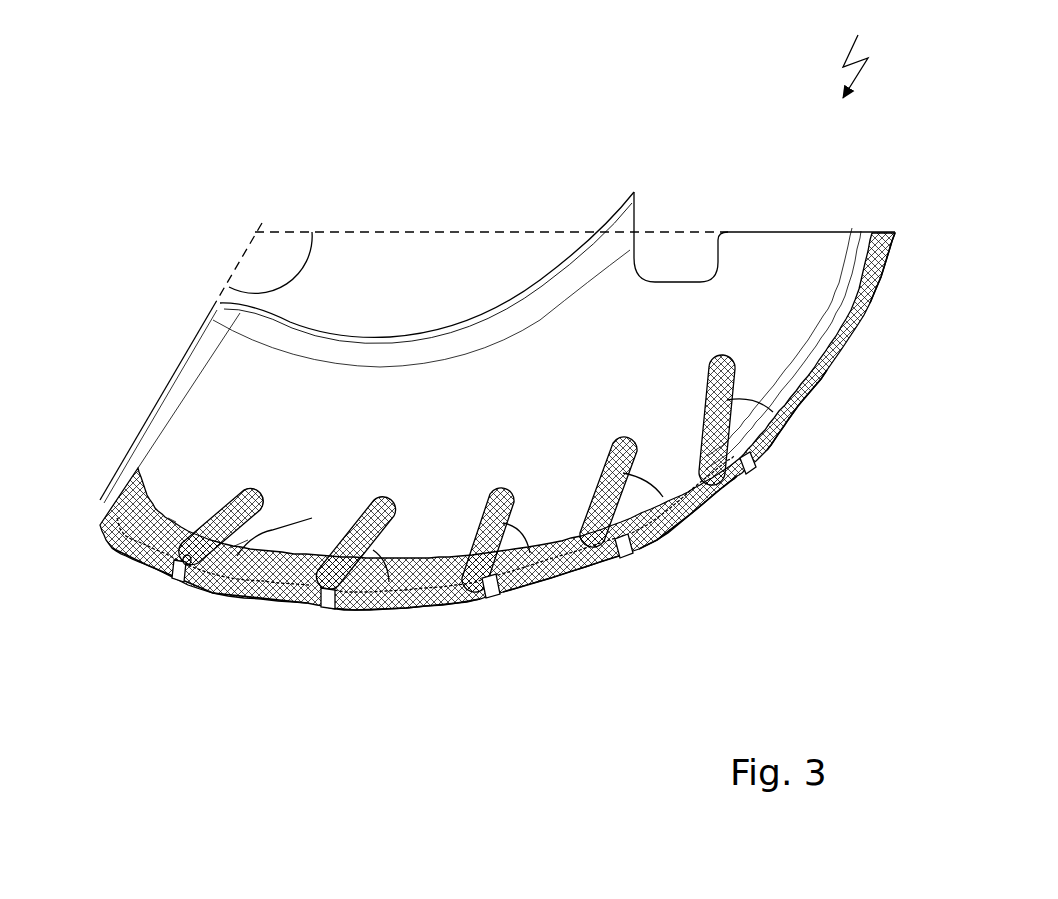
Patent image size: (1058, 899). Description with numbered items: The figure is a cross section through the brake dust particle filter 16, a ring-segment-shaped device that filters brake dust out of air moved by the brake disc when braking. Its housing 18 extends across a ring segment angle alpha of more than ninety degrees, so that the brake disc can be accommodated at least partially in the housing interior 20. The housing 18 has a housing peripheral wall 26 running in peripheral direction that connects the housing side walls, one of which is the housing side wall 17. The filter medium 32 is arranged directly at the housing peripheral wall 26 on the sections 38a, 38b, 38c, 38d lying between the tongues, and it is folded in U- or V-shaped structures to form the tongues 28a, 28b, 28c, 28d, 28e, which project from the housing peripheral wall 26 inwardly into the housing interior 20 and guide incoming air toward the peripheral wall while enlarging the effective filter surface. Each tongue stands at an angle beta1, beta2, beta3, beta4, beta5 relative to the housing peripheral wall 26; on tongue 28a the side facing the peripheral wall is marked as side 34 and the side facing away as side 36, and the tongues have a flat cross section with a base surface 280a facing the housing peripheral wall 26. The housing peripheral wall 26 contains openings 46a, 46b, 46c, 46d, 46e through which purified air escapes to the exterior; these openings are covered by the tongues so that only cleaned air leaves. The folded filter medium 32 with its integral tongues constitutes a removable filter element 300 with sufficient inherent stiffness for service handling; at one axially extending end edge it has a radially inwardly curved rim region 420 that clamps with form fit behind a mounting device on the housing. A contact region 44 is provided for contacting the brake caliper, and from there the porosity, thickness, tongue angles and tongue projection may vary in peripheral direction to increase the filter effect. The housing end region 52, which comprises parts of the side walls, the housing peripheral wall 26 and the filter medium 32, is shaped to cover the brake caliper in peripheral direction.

The brake dust particle filter 16 is at (861, 49).
The housing side wall 17 is at (826, 247).
The housing 18 is at (418, 328).
The housing interior 20 is at (644, 324).
The housing peripheral wall 26 is at (843, 363).
The filter medium 32 is at (857, 310).
The housing end region 52 is at (810, 413).
The tongue 28a is at (253, 490).
The tongue 28b is at (380, 507).
The tongue 28c is at (507, 488).
The tongue 28d is at (624, 440).
The tongue 28e is at (735, 368).
The side facing the housing peripheral wall 34 is at (237, 540).
The side facing away from the housing peripheral wall 36 is at (220, 490).
The section of the housing peripheral wall 38a is at (257, 597).
The section of the housing peripheral wall 38b is at (400, 607).
The section of the housing peripheral wall 38c is at (553, 582).
The section of the housing peripheral wall 38d is at (683, 517).
The contact region 44 is at (737, 226).
The opening 46a is at (180, 577).
The opening 46b is at (328, 603).
The opening 46c is at (490, 595).
The opening 46d is at (623, 553).
The opening 46e is at (748, 473).
The filter element 300 is at (175, 519).
The curved rim region 420 is at (130, 485).
The base surface 280a is at (177, 555).
The ring segment angle alpha is at (270, 262).
The angle beta1 is at (296, 520).
The angle beta2 is at (404, 557).
The angle beta3 is at (536, 526).
The angle beta4 is at (659, 468).
The angle beta5 is at (761, 381).